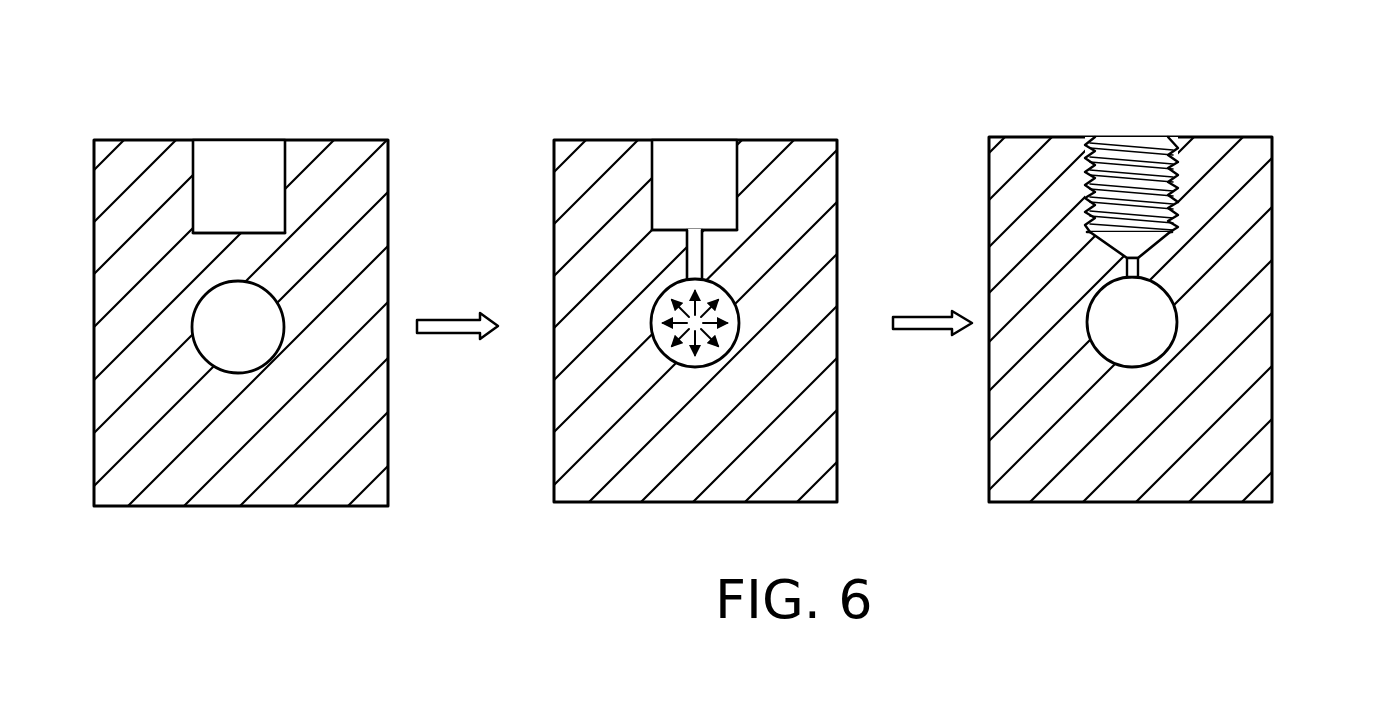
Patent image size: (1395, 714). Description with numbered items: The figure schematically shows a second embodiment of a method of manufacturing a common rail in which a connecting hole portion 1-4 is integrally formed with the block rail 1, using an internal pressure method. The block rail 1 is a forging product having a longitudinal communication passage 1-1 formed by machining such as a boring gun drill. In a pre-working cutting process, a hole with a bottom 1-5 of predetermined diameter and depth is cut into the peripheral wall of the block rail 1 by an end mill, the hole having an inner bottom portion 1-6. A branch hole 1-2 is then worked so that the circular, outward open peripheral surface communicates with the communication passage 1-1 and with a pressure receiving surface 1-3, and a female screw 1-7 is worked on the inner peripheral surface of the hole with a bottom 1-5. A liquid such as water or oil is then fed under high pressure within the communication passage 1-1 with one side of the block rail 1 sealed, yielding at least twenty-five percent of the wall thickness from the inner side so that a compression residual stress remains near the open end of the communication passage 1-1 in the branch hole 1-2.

The block rail 1 is at (237, 497).
The communication passage 1-1 is at (275, 303).
The branch hole 1-2 is at (693, 232).
The pressure receiving surface 1-3 is at (1147, 245).
The connecting hole portion 1-4 is at (1227, 139).
The hole with a bottom 1-5 is at (284, 164).
The inner bottom portion 1-6 is at (213, 232).
The female screw 1-7 is at (1160, 137).